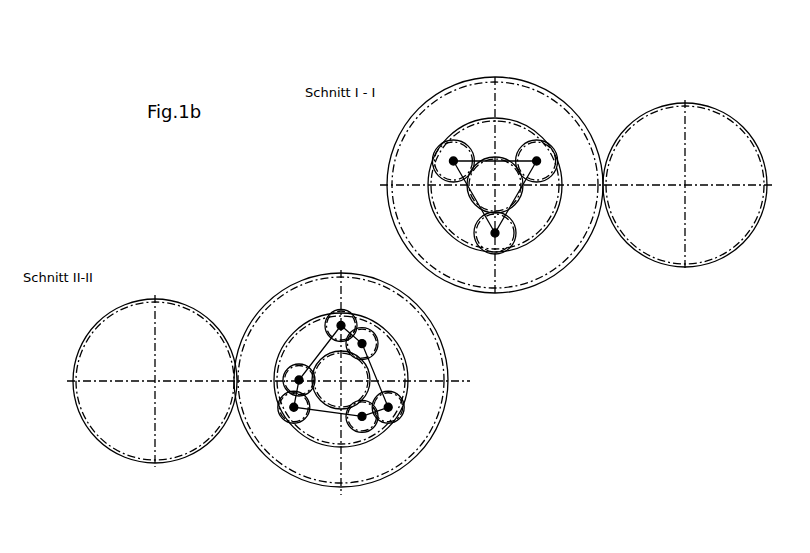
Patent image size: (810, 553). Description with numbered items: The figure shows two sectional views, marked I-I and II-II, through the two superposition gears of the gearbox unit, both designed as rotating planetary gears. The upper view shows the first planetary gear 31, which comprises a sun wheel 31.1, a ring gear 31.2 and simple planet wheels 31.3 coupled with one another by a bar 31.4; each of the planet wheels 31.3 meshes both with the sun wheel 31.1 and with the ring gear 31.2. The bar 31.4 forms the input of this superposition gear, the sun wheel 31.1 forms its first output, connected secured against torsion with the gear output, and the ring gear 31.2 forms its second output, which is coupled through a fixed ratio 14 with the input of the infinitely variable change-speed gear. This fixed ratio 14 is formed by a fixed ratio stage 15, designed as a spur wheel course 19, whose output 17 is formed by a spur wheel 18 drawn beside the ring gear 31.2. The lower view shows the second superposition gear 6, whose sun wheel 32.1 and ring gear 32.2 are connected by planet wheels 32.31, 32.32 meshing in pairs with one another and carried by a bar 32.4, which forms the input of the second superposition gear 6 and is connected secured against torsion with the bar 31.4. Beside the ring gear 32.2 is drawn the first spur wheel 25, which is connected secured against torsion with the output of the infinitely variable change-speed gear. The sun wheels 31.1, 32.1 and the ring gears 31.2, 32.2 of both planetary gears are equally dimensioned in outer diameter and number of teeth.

The planet wheel gear 31 is at (417, 90).
The sun wheel 31.1 is at (509, 191).
The ring gear 31.2 is at (560, 108).
The planet wheels 31.3 is at (503, 240).
The bar 31.4 is at (507, 215).
The fixed ratio 14 is at (685, 151).
The fixed ratio stage 15 is at (685, 151).
The spur wheel course 19 is at (651, 91).
The output 17 is at (691, 172).
The spur wheel 18 is at (733, 130).
The first spur wheel 25 is at (182, 315).
The second superposition gear 6 is at (235, 305).
The sun wheel 32.1 is at (355, 385).
The ring gear 32.2 is at (412, 442).
The planet wheel 32.31 is at (282, 392).
The planet wheel 32.32 is at (300, 423).
The bar 32.4 is at (385, 382).